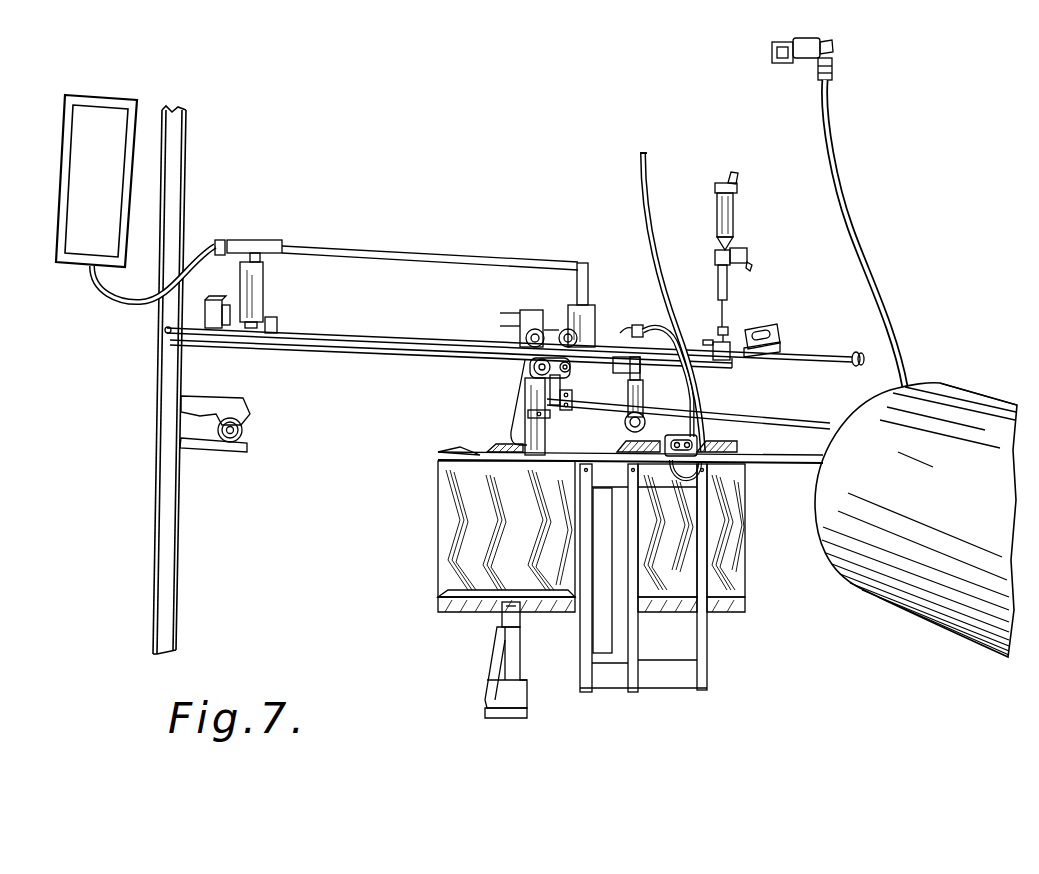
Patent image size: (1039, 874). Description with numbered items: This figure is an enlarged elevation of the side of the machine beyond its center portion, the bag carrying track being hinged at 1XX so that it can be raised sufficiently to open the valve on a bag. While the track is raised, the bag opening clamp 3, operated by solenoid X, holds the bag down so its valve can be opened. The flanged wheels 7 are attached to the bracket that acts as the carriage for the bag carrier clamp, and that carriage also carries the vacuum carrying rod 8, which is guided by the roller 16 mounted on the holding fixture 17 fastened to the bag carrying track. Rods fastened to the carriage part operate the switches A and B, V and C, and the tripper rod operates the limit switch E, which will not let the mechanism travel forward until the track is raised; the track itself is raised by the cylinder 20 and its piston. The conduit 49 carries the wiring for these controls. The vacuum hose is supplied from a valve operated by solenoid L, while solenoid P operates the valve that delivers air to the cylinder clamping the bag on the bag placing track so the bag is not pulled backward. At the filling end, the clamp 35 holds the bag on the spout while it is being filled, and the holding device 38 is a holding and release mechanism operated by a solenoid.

The conduit 49 is at (352, 249).
The switch V is at (265, 271).
The switch C is at (255, 312).
The hinge of the bag carrying track 1XX is at (161, 332).
The holding device 38 is at (215, 395).
The clamp 35 is at (244, 431).
The flanged wheels 7 is at (525, 348).
The switch B is at (591, 310).
The switch A is at (597, 338).
The holding fixture 17 is at (528, 395).
The roller 16 is at (625, 423).
The cylinder 20 is at (735, 216).
The limit switch E is at (748, 254).
The solenoid L is at (783, 50).
The vacuum carrying rod 8 is at (727, 416).
The solenoid P is at (669, 461).
The bag opening clamp 3 is at (512, 610).
The solenoid X is at (492, 646).